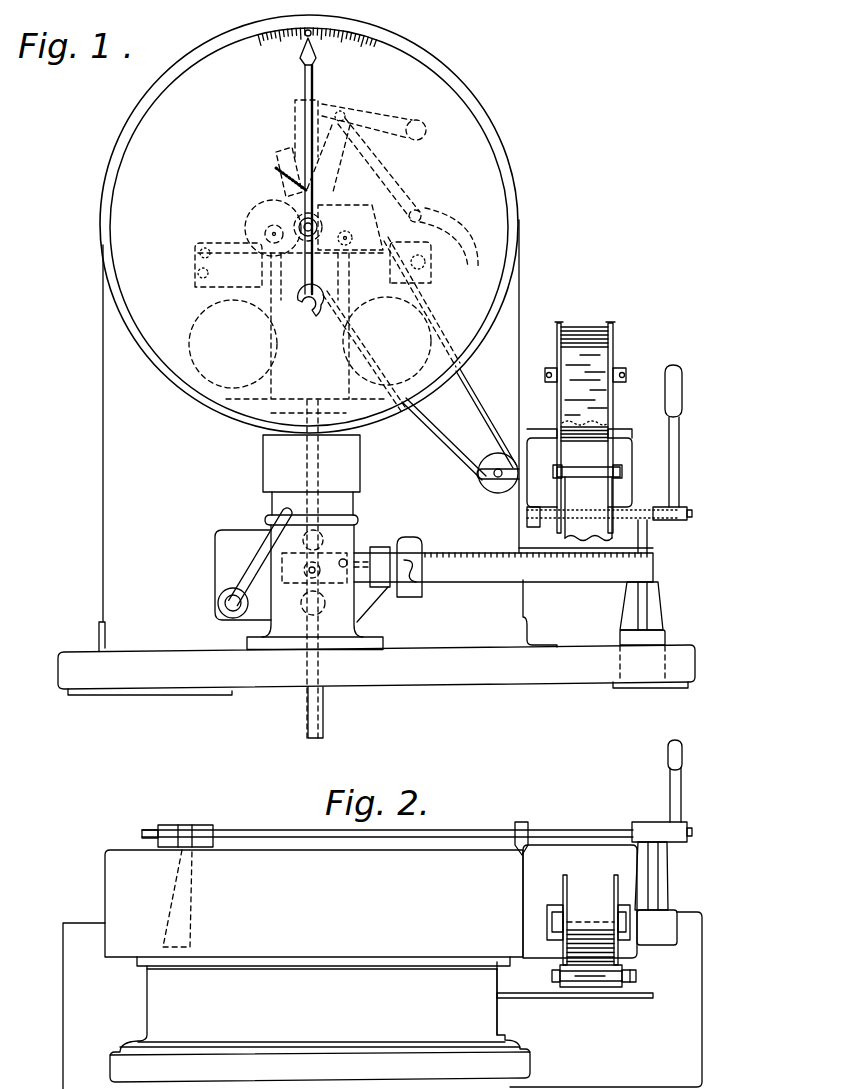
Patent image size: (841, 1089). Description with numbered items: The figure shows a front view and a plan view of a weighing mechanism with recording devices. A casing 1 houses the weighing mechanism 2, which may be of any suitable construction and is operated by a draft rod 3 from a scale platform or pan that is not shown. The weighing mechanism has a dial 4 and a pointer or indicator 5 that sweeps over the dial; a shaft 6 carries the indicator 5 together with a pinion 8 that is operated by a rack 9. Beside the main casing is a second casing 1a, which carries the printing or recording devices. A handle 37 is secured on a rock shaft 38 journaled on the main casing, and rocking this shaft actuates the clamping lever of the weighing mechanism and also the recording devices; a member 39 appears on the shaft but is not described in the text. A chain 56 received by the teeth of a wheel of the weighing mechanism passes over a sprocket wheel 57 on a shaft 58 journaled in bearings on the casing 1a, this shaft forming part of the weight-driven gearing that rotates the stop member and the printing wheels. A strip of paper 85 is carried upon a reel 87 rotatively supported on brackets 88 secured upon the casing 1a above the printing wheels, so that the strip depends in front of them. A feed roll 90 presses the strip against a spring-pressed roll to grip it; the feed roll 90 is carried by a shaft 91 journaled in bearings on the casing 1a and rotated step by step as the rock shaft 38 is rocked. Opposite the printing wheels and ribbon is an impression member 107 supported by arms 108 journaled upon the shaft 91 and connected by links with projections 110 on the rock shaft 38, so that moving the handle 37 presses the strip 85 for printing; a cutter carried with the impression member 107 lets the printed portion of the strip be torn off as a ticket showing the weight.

In FIG. 1, the casing 1 is at (523, 208).
In FIG. 2, the casing 1 is at (382, 969).
In FIG. 1, the casing 1a is at (624, 448).
In FIG. 2, the casing 1a is at (580, 901).
In FIG. 1, the weighing mechanism 2 is at (263, 227).
In FIG. 1, the draft rod 3 is at (323, 716).
In FIG. 1, the dial 4 is at (366, 44).
In FIG. 1, the pointer or indicator 5 is at (335, 38).
In FIG. 1, the shaft 6 is at (303, 232).
In FIG. 1, the pinion 8 is at (300, 195).
In FIG. 1, the rack 9 is at (280, 149).
In FIG. 1, the handle 37 is at (681, 465).
In FIG. 2, the handle 37 is at (682, 778).
In FIG. 1, the rock shaft 38 is at (543, 522).
In FIG. 2, the rock shaft 38 is at (417, 822).
In FIG. 2, the bracket 39 is at (523, 820).
In FIG. 1, the chain 56 is at (470, 400).
In FIG. 1, the sprocket wheel 57 is at (487, 455).
In FIG. 1, the shaft 58 is at (495, 490).
In FIG. 1, the strip of paper 85 is at (593, 323).
In FIG. 2, the strip of paper 85 is at (590, 886).
In FIG. 2, the reel 87 is at (563, 876).
In FIG. 2, the brackets 88 is at (548, 922).
In FIG. 2, the feed roll 90 is at (600, 982).
In FIG. 1, the shaft 91 is at (556, 445).
In FIG. 2, the shaft 91 is at (639, 979).
In FIG. 1, the impression member 107 is at (615, 478).
In FIG. 1, the arms 108 is at (620, 498).
In FIG. 1, the projections 110 is at (620, 532).